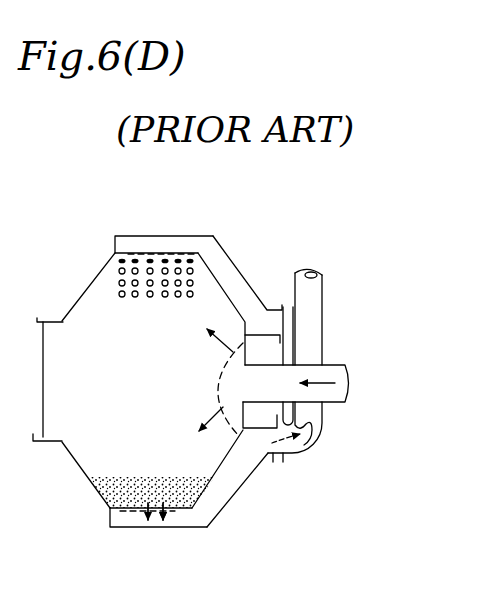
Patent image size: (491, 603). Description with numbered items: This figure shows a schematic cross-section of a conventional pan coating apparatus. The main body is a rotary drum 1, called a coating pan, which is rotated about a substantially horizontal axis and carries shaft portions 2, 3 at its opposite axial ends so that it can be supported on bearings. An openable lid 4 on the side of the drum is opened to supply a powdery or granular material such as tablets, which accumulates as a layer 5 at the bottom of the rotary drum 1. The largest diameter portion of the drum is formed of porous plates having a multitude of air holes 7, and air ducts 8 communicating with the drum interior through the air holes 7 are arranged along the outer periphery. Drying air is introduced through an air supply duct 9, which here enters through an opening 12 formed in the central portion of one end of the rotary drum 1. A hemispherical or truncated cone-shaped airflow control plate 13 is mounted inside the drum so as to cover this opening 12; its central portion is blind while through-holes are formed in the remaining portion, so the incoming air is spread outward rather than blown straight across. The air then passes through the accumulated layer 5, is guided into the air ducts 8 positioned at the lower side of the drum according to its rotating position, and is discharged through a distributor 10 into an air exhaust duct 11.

The rotary drum 1 is at (222, 283).
The shaft portion 2 is at (47, 444).
The shaft portion 3 is at (312, 407).
The openable lid 4 is at (43, 378).
The layer of powdery or granular material 5 is at (112, 492).
The air holes 7 is at (166, 260).
The air ducts 8 is at (140, 236).
The air supply duct 9 is at (343, 364).
The distributor 10 is at (290, 328).
The air exhaust duct 11 is at (318, 295).
The opening 12 is at (247, 385).
The airflow control plate 13 is at (215, 387).